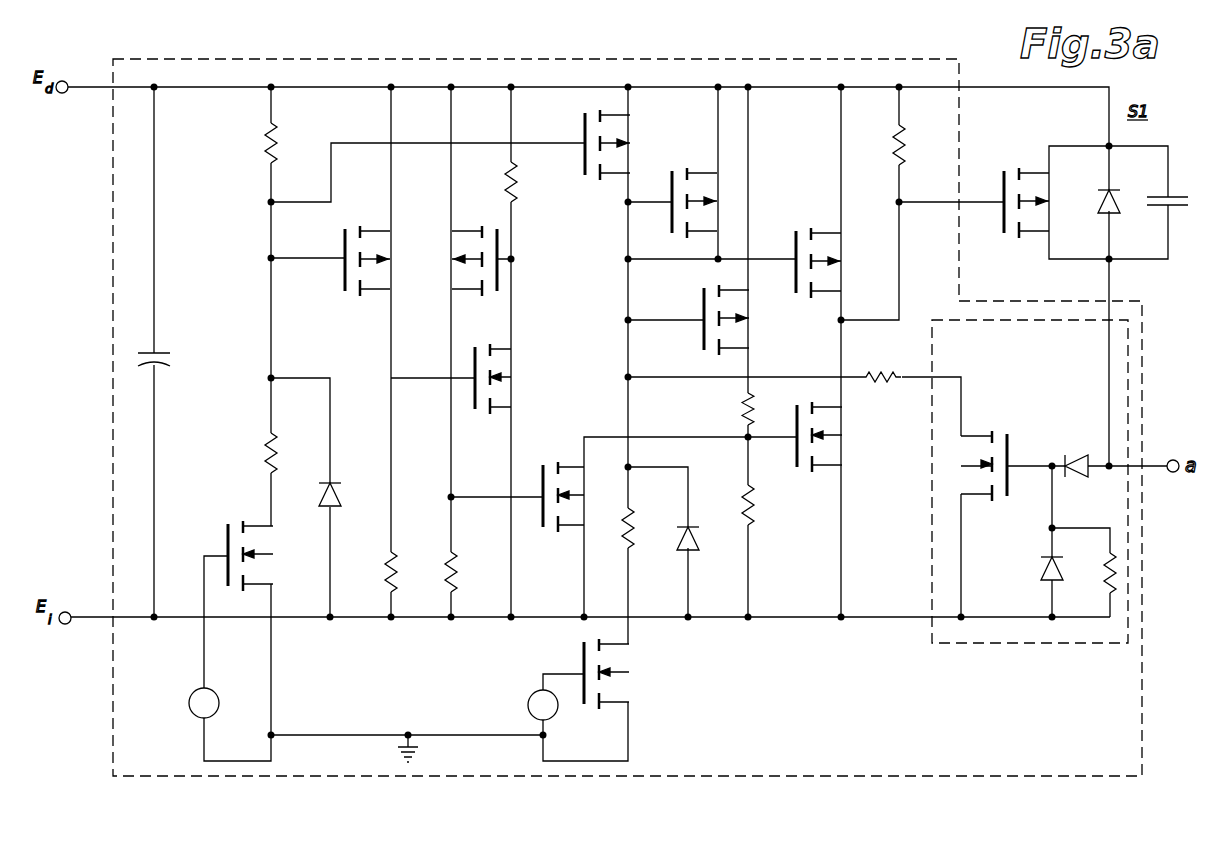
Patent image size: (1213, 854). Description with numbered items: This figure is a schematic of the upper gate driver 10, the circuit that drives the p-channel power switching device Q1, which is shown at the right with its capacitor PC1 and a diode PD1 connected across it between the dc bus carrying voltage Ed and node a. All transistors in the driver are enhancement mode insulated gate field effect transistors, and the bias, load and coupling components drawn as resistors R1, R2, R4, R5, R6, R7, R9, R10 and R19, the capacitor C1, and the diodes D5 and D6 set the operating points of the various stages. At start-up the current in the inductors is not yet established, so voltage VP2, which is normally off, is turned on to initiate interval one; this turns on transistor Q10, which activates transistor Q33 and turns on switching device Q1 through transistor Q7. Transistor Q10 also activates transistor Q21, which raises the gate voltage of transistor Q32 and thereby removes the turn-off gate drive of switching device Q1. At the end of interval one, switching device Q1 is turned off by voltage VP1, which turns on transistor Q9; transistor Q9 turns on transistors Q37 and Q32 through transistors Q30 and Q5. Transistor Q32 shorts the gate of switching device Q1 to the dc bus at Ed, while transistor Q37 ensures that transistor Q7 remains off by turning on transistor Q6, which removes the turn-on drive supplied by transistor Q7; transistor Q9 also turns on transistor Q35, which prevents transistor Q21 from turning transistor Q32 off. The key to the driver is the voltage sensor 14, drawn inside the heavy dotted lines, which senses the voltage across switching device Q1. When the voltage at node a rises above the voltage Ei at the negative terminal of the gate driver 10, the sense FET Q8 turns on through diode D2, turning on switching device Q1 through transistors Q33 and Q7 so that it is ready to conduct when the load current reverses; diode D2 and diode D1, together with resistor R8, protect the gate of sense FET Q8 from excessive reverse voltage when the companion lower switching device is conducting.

The upper gate driver 10 is at (423, 59).
The voltage sensor 14 is at (1030, 503).
The capacitor C1 is at (169, 358).
The resistor R1 is at (284, 143).
The resistor R2 is at (524, 182).
The resistor R4 is at (404, 572).
The resistor R5 is at (464, 572).
The resistor R6 is at (761, 409).
The resistor R7 is at (762, 505).
The resistor R8 is at (1095, 573).
The resistor R9 is at (284, 453).
The resistor R10 is at (648, 528).
The resistor R19 is at (917, 145).
The diode D1 is at (1038, 569).
The diode D2 is at (1075, 453).
The diode D5 is at (345, 494).
The diode D6 is at (701, 540).
The protection diode PD1 is at (1124, 211).
The capacitor PC1 is at (1176, 214).
The switching device Q1 is at (1012, 223).
The transistor Q5 is at (487, 403).
The transistor Q6 is at (578, 497).
The transistor Q7 is at (834, 437).
The sense FET Q8 is at (995, 442).
The transistor Q9 is at (267, 556).
The transistor Q10 is at (629, 674).
The transistor Q21 is at (678, 208).
The transistor Q30 is at (360, 279).
The transistor Q32 is at (836, 263).
The transistor Q33 is at (746, 320).
The transistor Q35 is at (625, 145).
The transistor Q37 is at (476, 279).
The voltage VP1 is at (220, 702).
The voltage VP2 is at (523, 704).